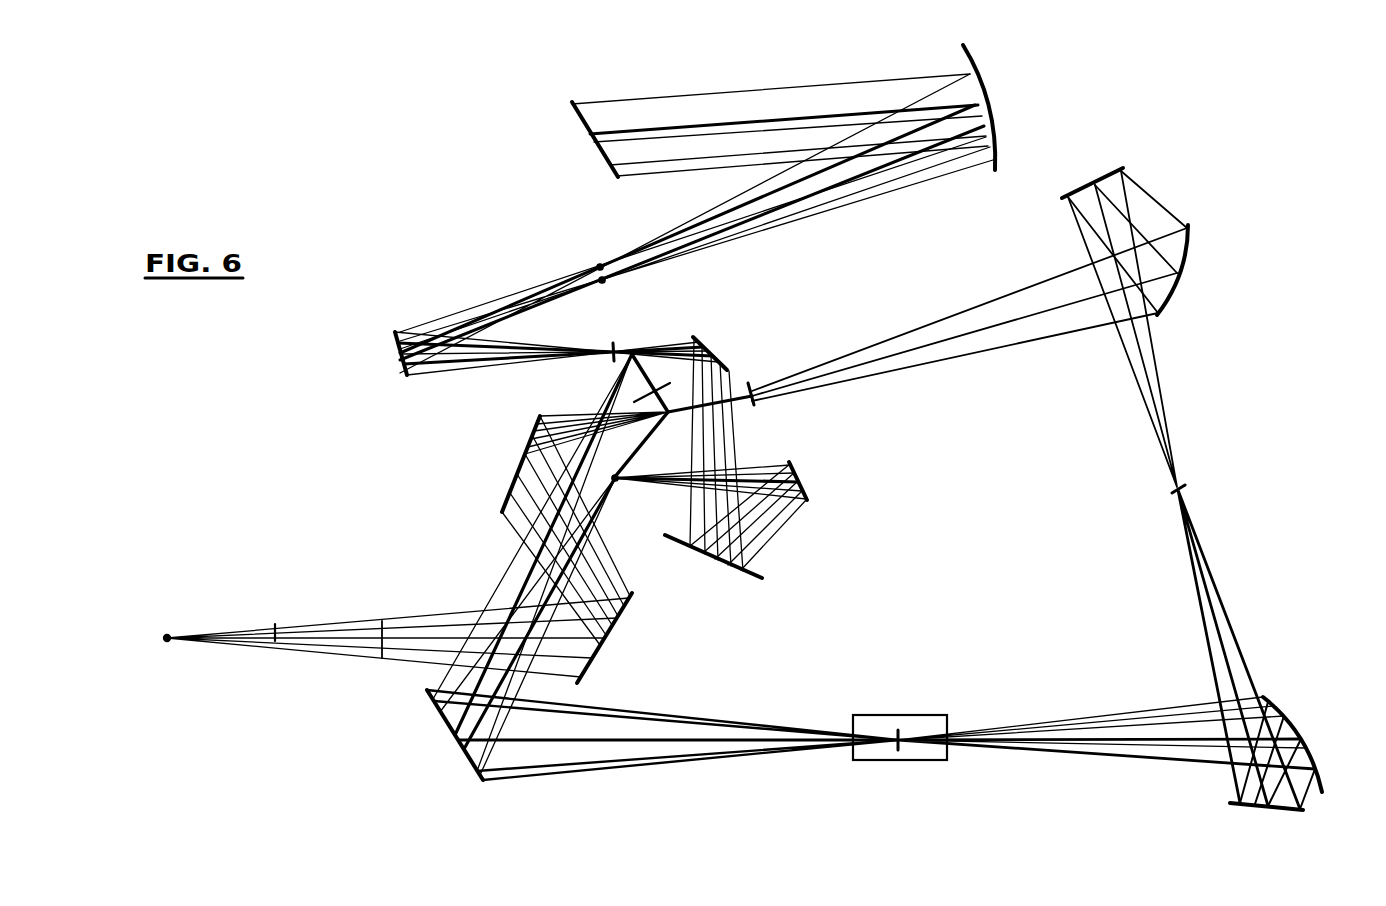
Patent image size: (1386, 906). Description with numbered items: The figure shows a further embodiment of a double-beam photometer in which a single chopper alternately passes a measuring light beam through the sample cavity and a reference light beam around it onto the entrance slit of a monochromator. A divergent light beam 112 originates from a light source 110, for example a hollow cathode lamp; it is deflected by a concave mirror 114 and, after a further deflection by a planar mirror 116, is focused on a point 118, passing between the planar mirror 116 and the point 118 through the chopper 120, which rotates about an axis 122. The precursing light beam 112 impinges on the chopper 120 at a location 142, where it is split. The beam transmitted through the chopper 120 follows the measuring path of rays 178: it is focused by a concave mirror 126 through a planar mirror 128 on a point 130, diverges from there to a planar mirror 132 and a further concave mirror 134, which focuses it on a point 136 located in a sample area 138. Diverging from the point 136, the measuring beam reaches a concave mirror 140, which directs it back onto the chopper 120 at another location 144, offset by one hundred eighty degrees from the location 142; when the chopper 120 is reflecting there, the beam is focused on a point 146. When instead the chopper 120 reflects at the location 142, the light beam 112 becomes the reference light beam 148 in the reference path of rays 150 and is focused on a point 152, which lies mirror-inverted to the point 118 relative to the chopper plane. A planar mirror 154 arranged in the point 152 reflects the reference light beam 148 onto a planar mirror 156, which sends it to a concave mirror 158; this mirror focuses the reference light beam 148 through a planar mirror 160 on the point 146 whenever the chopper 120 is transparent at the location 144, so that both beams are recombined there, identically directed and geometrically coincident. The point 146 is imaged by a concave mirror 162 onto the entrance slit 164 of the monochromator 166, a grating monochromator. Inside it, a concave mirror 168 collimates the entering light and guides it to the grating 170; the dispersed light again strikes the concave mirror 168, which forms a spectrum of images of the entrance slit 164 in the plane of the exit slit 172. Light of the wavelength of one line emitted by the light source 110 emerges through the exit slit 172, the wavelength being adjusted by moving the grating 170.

The light source 110 is at (168, 633).
The divergent light beam 112 is at (278, 626).
The concave mirror 114 is at (603, 648).
The planar mirror 116 is at (537, 421).
The point 118 is at (751, 384).
The chopper 120 is at (648, 355).
The axis 122 is at (642, 396).
The concave mirror 126 is at (1178, 278).
The planar mirror 128 is at (1106, 166).
The point 130 is at (1182, 486).
The planar mirror 132 is at (1230, 806).
The concave mirror 134 is at (1279, 700).
The point 136 is at (899, 728).
The sample area 138 is at (859, 714).
The concave mirror 140 is at (462, 752).
The location 142 is at (680, 427).
The location 144 is at (638, 348).
The point 146 is at (615, 345).
The reference light beam 148 is at (576, 530).
The reference path of rays 150 is at (748, 460).
The point 152 is at (614, 483).
The planar mirror 154 is at (531, 510).
The planar mirror 156 is at (800, 474).
The concave mirror 158 is at (718, 574).
The planar mirror 160 is at (713, 337).
The concave mirror 162 is at (393, 338).
The entrance slit 164 is at (598, 263).
The monochromator 166 is at (780, 114).
The concave mirror 168 is at (985, 95).
The grating 170 is at (595, 147).
The exit slit 172 is at (597, 288).
The measuring path of rays 178 is at (1106, 683).